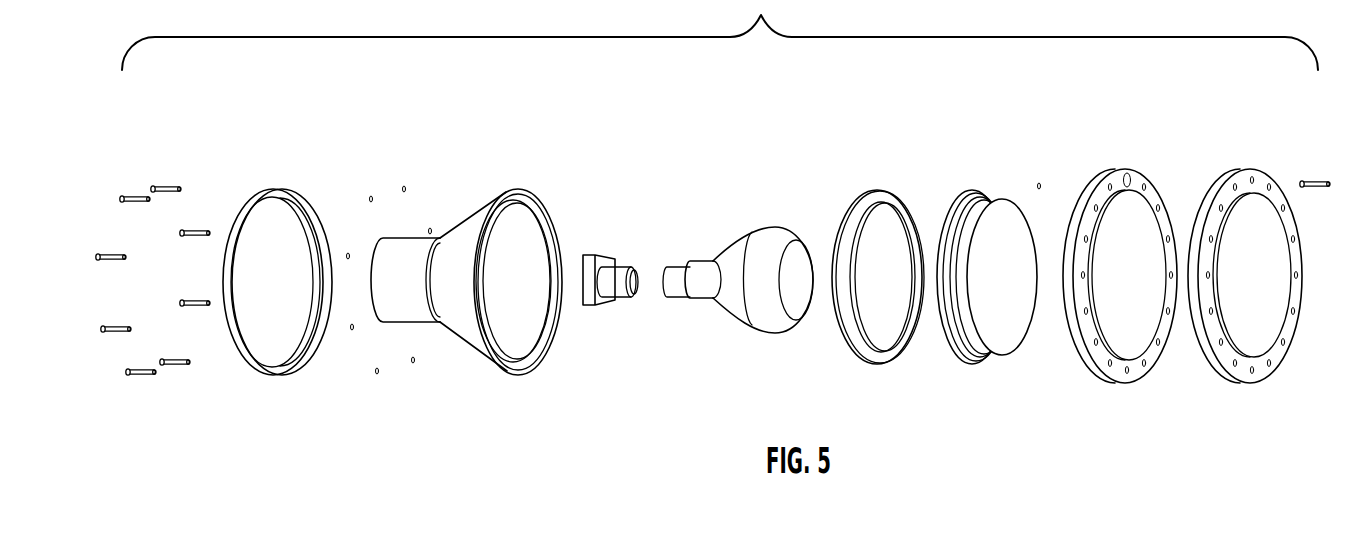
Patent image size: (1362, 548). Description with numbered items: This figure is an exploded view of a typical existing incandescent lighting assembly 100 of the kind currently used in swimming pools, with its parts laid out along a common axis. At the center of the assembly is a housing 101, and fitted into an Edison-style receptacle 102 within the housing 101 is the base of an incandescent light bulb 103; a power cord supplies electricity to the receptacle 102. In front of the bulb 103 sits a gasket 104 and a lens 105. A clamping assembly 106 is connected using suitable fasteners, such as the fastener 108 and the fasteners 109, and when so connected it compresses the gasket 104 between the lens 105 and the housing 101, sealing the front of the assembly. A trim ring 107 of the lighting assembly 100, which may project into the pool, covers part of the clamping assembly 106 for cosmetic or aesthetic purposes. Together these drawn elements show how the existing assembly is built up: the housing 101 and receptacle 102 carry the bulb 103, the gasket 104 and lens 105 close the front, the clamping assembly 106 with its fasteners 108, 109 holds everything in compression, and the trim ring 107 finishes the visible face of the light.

The incandescent lighting assembly 100 is at (1080, 124).
The housing 101 is at (514, 190).
The Edison-style receptacle 102 is at (600, 253).
The incandescent light bulb 103 is at (775, 227).
The gasket 104 is at (875, 190).
The lens 105 is at (978, 190).
The clamping assembly 106 is at (277, 189).
The trim ring 107 is at (1248, 168).
The fastener 108 is at (1041, 183).
The fasteners 109 is at (166, 189).